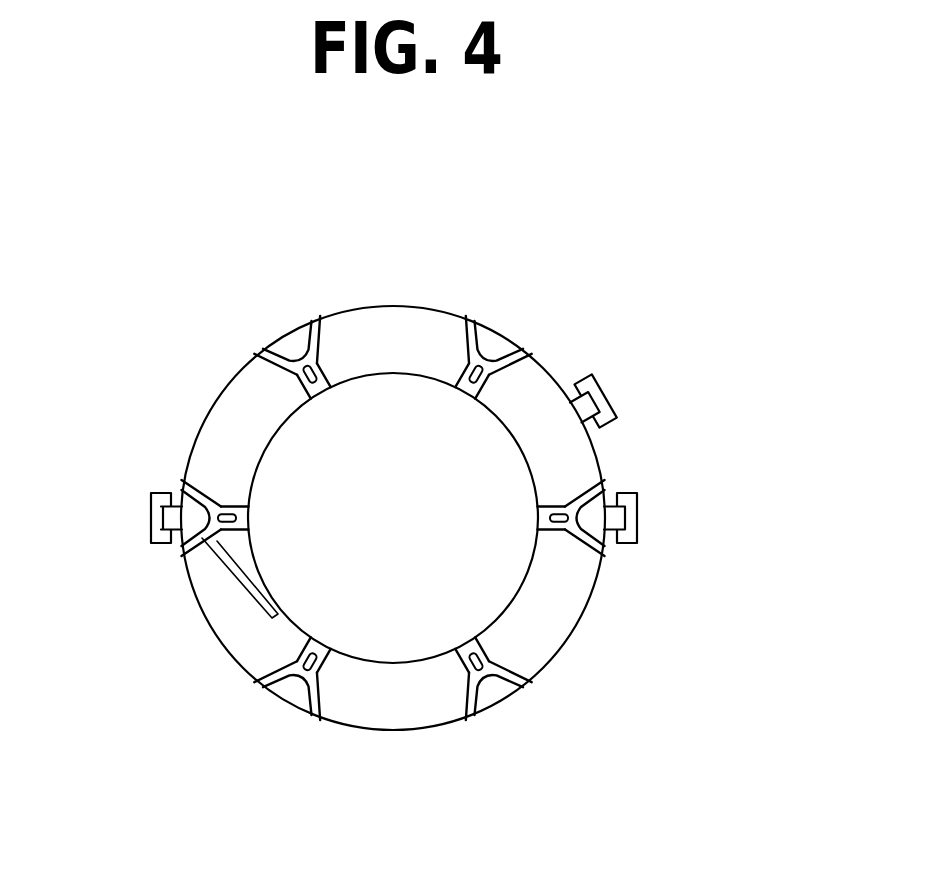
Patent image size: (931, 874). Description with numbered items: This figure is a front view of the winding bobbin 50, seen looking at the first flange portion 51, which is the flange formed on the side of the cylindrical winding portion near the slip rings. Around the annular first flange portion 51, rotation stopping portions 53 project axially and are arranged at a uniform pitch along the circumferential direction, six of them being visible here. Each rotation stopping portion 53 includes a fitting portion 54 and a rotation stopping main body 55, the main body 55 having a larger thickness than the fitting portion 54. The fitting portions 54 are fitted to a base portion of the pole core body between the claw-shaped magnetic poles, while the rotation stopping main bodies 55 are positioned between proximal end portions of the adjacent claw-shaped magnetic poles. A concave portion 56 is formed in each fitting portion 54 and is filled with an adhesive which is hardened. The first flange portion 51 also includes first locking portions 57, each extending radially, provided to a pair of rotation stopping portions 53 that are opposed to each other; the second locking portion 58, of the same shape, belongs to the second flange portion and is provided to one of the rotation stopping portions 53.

The winding bobbin 50 is at (638, 448).
The first flange portion 51 is at (552, 613).
The rotation stopping portion 53 is at (327, 342).
The fitting portion 54 is at (300, 388).
The rotation stopping main body 55 is at (268, 374).
The concave portion 56 is at (463, 368).
The first locking portion 57 is at (637, 518).
The second locking portion 58 is at (608, 408).